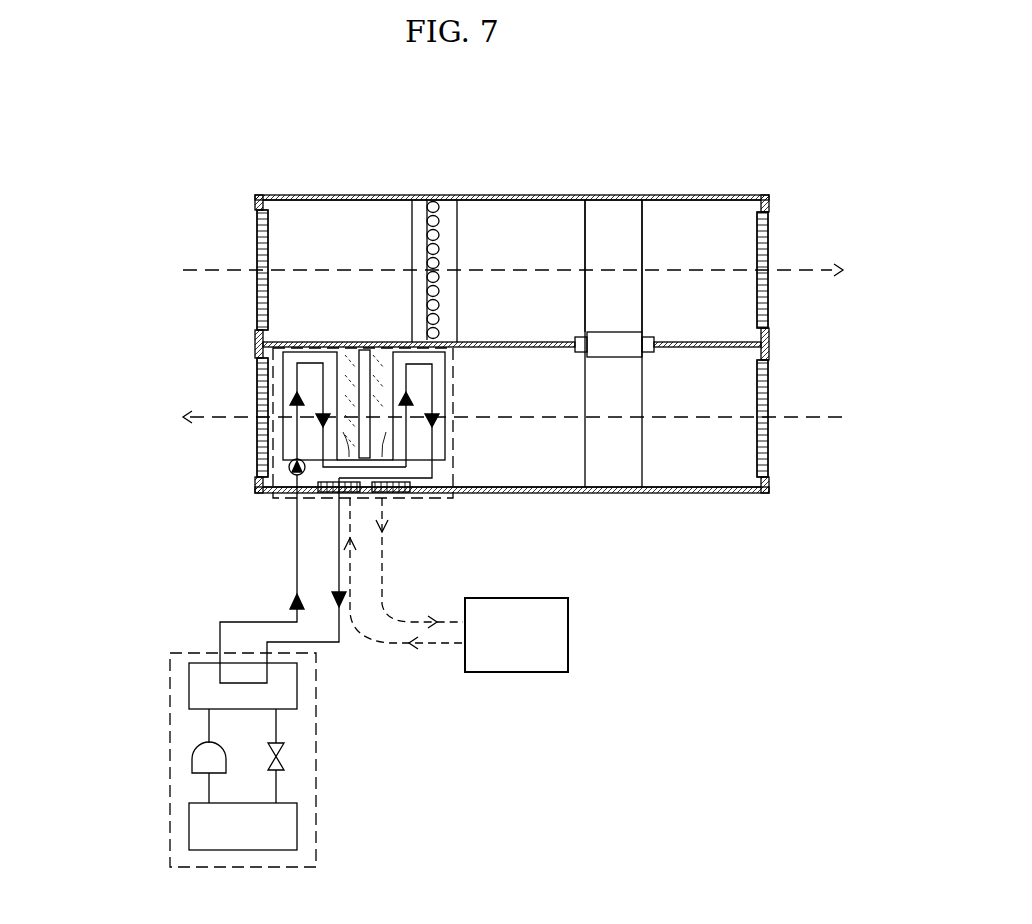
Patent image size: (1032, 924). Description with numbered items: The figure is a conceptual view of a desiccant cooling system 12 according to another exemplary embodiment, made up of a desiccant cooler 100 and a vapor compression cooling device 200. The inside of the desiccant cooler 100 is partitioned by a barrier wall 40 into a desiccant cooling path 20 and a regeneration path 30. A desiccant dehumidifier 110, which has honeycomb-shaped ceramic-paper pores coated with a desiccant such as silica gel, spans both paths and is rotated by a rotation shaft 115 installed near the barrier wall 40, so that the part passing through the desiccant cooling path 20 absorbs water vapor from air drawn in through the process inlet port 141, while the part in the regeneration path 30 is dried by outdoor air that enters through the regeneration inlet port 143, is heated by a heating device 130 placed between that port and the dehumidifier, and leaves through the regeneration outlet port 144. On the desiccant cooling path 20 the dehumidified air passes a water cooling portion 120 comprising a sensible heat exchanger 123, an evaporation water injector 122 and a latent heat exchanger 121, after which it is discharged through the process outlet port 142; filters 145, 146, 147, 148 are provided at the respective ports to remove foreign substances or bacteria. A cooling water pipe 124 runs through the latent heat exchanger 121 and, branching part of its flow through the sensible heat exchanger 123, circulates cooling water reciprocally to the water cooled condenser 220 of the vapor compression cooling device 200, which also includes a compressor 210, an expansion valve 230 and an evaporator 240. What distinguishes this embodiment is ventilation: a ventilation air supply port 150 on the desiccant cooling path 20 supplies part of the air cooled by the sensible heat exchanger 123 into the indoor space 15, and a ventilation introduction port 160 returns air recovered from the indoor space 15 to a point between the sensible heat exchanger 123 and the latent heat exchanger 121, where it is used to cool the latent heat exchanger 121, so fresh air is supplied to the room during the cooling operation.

The desiccant cooling system 12 is at (71, 136).
The indoor space 15 is at (568, 635).
The desiccant cooling path 20 is at (731, 469).
The regeneration path 30 is at (731, 217).
The barrier wall 40 is at (735, 343).
The desiccant cooler 100 is at (163, 236).
The desiccant dehumidifier 110 is at (615, 212).
The rotation shaft 115 is at (590, 335).
The water cooling portion 120 is at (275, 393).
The latent heat exchanger 121 is at (288, 430).
The evaporation water injector 122 is at (365, 348).
The sensible heat exchanger 123 is at (440, 437).
The cooling water pipe 124 is at (295, 558).
The heating device 130 is at (424, 215).
The process inlet port 141 is at (770, 462).
The process outlet port 142 is at (258, 457).
The regeneration inlet port 143 is at (256, 228).
The regeneration outlet port 144 is at (770, 230).
The filter 145 is at (762, 418).
The filter 146 is at (262, 417).
The filter 147 is at (262, 270).
The filter 148 is at (762, 270).
The ventilation air supply port 150 is at (410, 492).
The ventilation introduction port 160 is at (317, 485).
The vapor compression cooling device 200 is at (163, 632).
The compressor 210 is at (192, 760).
The water cooled condenser 220 is at (190, 688).
The expansion valve 230 is at (272, 762).
The evaporator 240 is at (193, 827).